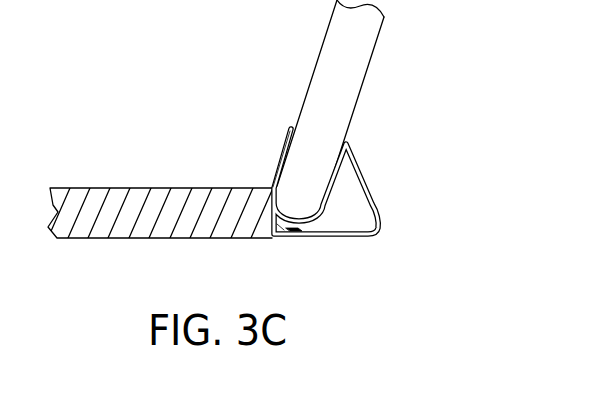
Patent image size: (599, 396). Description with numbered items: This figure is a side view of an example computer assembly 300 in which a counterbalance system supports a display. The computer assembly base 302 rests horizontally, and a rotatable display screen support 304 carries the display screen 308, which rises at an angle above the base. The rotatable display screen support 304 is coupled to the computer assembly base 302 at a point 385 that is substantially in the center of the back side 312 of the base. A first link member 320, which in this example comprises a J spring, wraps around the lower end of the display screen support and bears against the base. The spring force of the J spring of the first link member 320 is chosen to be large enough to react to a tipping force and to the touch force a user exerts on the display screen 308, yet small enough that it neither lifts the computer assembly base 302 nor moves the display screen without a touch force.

The computer assembly 300 is at (192, 114).
The computer assembly base 302 is at (93, 237).
The rotatable display screen support 304 is at (277, 188).
The display screen 308 is at (328, 71).
The back side 312 is at (293, 232).
The first link member 320 is at (363, 181).
The point 385 is at (270, 236).